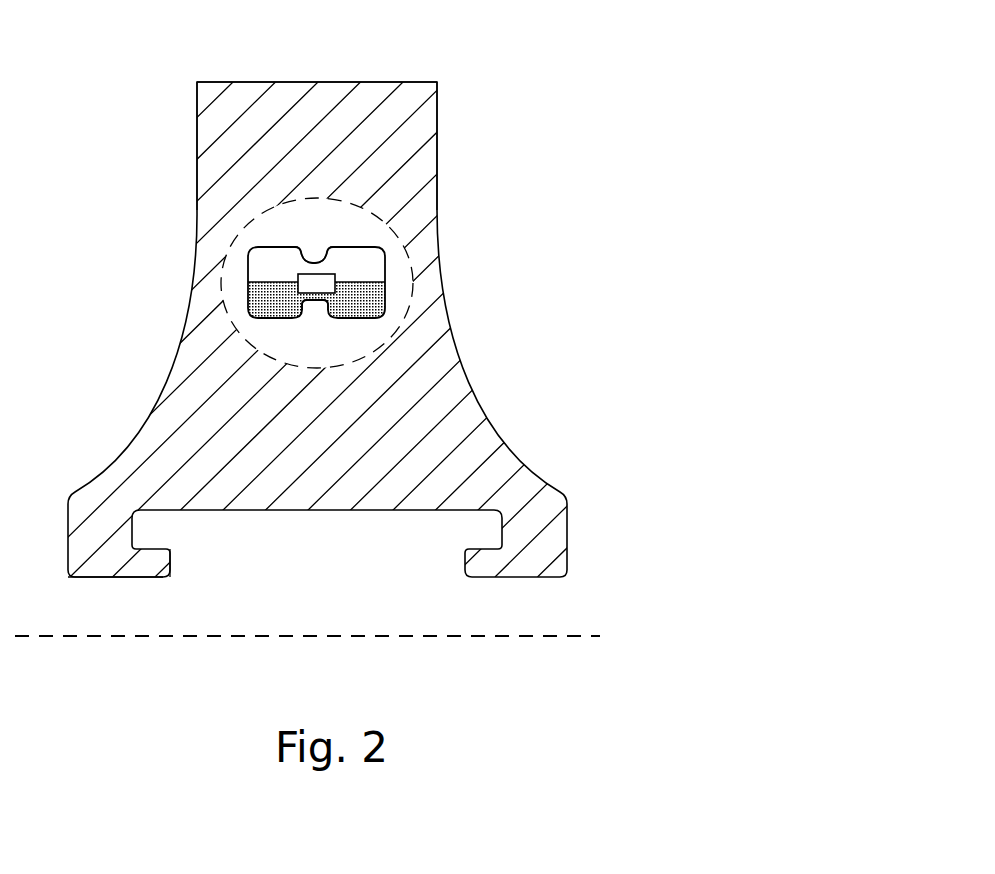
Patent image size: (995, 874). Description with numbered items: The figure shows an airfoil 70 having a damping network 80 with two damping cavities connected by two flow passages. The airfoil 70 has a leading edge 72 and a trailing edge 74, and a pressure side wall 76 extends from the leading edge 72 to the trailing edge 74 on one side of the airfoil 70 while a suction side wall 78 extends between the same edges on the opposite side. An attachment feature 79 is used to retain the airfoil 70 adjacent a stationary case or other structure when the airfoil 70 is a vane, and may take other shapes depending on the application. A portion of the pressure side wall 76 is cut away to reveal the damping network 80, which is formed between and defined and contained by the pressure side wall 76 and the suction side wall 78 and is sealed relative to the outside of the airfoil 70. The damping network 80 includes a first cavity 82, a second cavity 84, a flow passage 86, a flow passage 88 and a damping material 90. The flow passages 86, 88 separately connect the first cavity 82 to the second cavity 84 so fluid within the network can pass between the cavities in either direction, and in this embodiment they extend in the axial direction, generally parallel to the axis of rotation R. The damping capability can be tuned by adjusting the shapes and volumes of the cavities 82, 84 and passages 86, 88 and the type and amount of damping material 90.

The airfoil 70 is at (560, 149).
The leading edge 72 is at (197, 158).
The trailing edge 74 is at (437, 225).
The pressure side wall 76 is at (405, 388).
The suction side wall 78 is at (283, 168).
The attachment feature 79 is at (150, 582).
The damping network 80 is at (392, 274).
The first cavity 82 is at (263, 263).
The second cavity 84 is at (358, 263).
The flow passage 86 is at (313, 261).
The flow passage 88 is at (317, 302).
The damping material 90 is at (363, 304).
The axis of rotation R is at (548, 636).